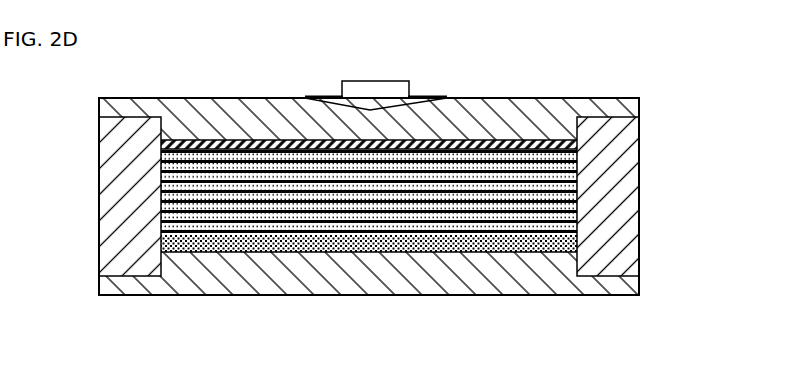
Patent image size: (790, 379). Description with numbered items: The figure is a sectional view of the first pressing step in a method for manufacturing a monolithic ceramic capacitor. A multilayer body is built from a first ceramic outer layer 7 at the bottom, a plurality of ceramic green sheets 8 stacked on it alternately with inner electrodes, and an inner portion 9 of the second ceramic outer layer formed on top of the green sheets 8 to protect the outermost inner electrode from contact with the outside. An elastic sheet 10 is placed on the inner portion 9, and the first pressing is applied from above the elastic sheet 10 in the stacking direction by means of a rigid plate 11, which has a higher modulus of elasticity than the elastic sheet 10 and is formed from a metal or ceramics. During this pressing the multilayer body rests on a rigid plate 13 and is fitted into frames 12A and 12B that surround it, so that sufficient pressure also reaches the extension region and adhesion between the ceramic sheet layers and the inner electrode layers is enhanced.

The first ceramic outer layer 7 is at (318, 253).
The ceramic green sheets 8 is at (161, 232).
The inner portion 9 is at (577, 150).
The elastic sheet 10 is at (515, 138).
The rigid plate 11 is at (188, 98).
The frame 12A is at (99, 178).
The frame 12B is at (639, 193).
The rigid plate 13 is at (223, 295).